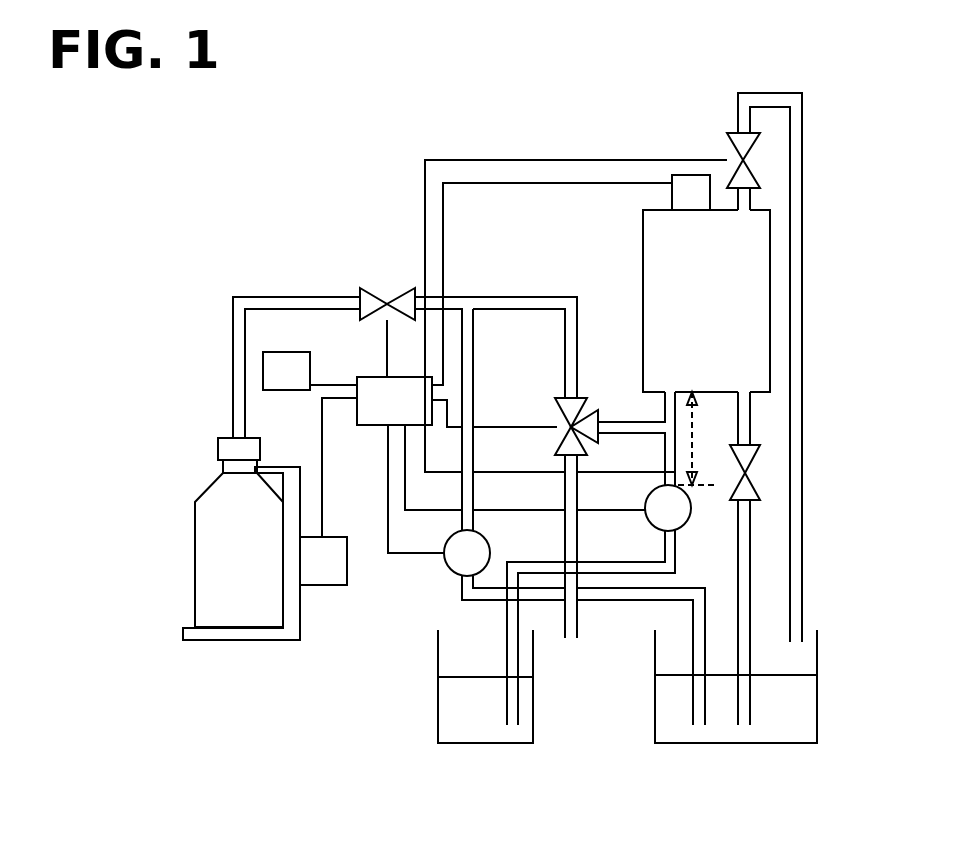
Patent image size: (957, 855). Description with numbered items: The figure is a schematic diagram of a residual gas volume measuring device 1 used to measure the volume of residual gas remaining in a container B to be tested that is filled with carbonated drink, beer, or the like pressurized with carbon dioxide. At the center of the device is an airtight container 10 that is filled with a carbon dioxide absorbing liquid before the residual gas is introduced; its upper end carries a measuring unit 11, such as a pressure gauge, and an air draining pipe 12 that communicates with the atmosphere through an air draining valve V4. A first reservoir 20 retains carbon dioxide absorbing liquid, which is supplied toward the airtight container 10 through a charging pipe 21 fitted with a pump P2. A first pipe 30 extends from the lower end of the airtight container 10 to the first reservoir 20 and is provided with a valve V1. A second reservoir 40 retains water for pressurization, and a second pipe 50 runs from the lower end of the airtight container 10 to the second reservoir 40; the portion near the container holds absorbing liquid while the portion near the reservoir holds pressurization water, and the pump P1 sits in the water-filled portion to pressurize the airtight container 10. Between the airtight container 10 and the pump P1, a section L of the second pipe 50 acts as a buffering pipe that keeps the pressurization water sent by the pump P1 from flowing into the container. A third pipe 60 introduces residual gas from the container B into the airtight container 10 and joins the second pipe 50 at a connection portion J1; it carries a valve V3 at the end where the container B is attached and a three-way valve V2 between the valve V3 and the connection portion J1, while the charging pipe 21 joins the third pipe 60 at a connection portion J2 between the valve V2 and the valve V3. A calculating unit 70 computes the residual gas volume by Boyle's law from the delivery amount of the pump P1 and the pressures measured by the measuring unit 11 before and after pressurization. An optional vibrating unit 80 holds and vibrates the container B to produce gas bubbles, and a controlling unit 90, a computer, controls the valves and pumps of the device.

The residual gas volume measuring device 1 is at (389, 124).
The airtight container 10 is at (643, 248).
The measuring unit 11 is at (672, 192).
The air draining pipe 12 is at (803, 415).
The first reservoir 20 is at (817, 672).
The charging pipe 21 is at (607, 600).
The first pipe 30 is at (737, 600).
The second reservoir 40 is at (438, 718).
The second pipe 50 is at (505, 638).
The third pipe 60 is at (315, 297).
The calculating unit 70 is at (272, 352).
The vibrating unit 80 is at (347, 565).
The controlling unit 90 is at (378, 377).
The container to be tested B is at (205, 490).
The valve V1 is at (761, 446).
The valve V2 is at (557, 426).
The valve V3 is at (387, 320).
The air draining valve V4 is at (760, 160).
The pump P1 is at (668, 508).
The pump P2 is at (467, 553).
The connection portion J1 is at (636, 439).
The connection portion J2 is at (496, 396).
The section L is at (697, 457).